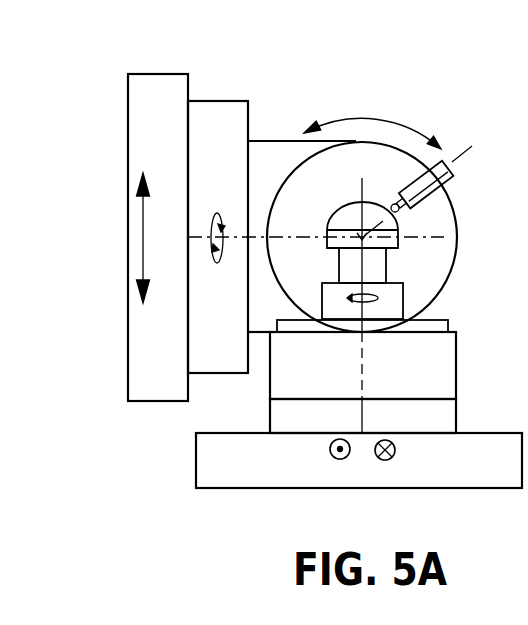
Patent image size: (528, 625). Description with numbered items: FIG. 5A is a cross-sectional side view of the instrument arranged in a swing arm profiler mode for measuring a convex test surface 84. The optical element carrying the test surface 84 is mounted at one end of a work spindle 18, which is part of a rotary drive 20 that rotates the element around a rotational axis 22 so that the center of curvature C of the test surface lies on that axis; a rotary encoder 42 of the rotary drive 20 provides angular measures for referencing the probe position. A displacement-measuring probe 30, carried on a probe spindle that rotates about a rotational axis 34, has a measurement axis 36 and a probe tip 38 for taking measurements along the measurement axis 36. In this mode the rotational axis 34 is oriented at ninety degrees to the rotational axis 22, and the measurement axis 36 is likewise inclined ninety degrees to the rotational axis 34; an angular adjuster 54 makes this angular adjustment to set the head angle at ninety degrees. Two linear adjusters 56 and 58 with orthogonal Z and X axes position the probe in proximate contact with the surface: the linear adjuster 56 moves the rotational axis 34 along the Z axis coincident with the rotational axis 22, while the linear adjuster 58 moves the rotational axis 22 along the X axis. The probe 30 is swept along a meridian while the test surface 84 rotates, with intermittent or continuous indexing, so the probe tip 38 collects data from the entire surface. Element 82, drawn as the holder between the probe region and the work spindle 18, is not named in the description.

The work spindle 18 is at (328, 300).
The rotary drive 20 is at (326, 378).
The rotational axis 22 is at (363, 352).
The displacement-measuring probe 30 is at (449, 177).
The rotational axis 34 is at (376, 118).
The measurement axis 36 is at (472, 146).
The probe tip 38 is at (388, 212).
The rotary encoder 42 is at (280, 417).
The angular adjuster 54 is at (216, 263).
The linear adjuster 56 is at (142, 227).
The linear adjuster 58 is at (331, 452).
The workpiece holder 82 is at (396, 248).
The convex test surface 84 is at (339, 203).